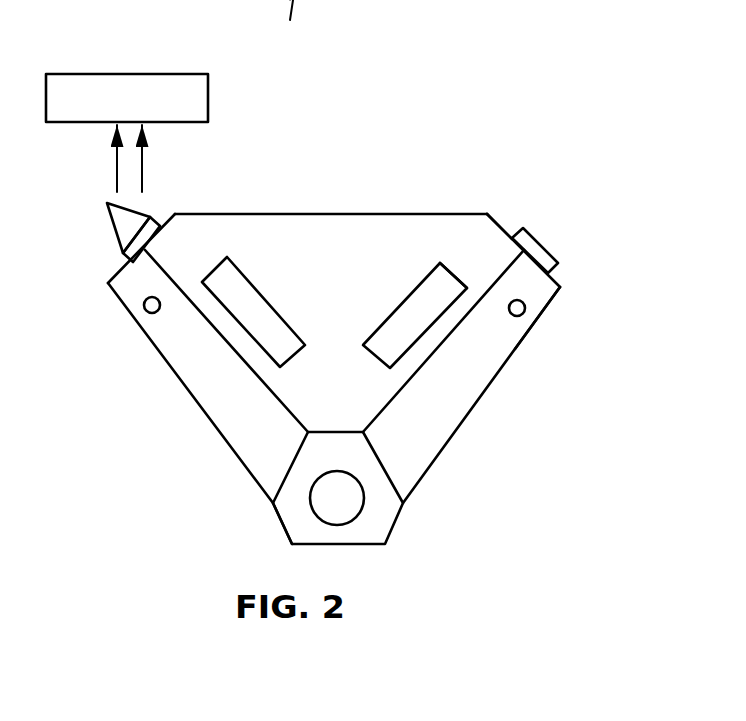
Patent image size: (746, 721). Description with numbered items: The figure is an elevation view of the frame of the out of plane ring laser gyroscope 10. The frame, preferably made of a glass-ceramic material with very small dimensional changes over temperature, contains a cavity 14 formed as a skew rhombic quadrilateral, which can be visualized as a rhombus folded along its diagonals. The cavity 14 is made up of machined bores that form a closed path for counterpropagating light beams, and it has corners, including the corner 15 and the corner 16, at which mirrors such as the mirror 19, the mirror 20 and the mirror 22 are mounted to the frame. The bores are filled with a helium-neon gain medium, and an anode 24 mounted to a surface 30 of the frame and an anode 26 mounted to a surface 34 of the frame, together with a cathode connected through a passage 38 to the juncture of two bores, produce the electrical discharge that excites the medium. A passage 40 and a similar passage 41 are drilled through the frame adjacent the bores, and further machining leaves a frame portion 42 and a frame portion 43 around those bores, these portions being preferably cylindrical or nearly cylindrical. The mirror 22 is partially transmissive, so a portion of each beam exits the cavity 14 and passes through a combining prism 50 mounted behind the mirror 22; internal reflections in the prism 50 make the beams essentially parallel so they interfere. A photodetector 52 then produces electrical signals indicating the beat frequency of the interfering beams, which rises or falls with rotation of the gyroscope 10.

The out of plane ring laser gyroscope 10 is at (625, 492).
The cavity 14 is at (548, 323).
The corner 15 is at (248, 530).
The corner 16 is at (597, 223).
The mirror 19 is at (363, 507).
The mirror 20 is at (535, 237).
The mirror 22 is at (130, 255).
The anode 24 is at (526, 309).
The anode 26 is at (144, 303).
The surface 30 is at (420, 448).
The surface 34 is at (223, 413).
The passage 38 is at (473, 433).
The passage 40 is at (430, 323).
The passage 41 is at (218, 295).
The frame portion 42 is at (467, 262).
The frame portion 43 is at (237, 352).
The combining prism 50 is at (108, 222).
The photodetector 52 is at (105, 73).